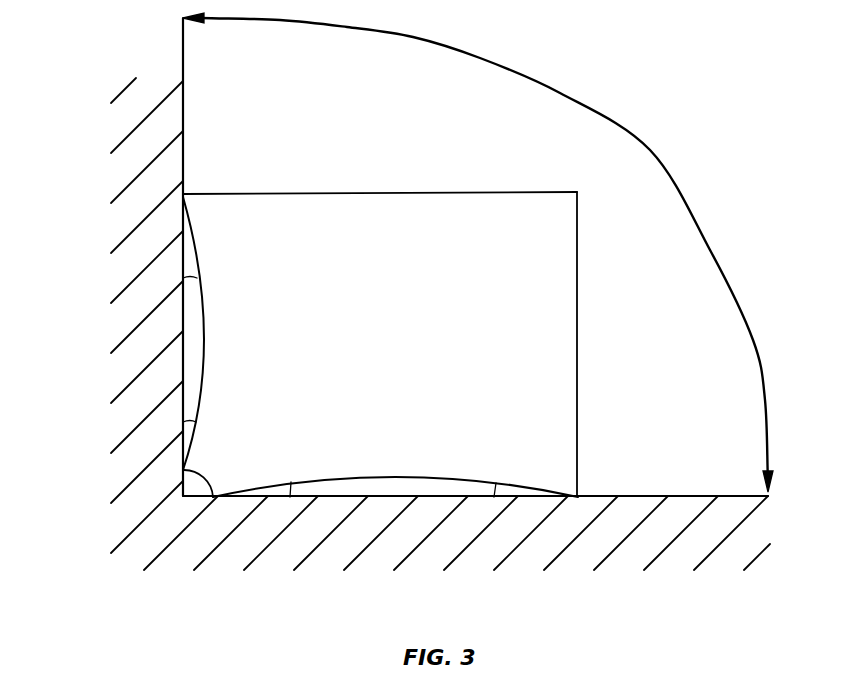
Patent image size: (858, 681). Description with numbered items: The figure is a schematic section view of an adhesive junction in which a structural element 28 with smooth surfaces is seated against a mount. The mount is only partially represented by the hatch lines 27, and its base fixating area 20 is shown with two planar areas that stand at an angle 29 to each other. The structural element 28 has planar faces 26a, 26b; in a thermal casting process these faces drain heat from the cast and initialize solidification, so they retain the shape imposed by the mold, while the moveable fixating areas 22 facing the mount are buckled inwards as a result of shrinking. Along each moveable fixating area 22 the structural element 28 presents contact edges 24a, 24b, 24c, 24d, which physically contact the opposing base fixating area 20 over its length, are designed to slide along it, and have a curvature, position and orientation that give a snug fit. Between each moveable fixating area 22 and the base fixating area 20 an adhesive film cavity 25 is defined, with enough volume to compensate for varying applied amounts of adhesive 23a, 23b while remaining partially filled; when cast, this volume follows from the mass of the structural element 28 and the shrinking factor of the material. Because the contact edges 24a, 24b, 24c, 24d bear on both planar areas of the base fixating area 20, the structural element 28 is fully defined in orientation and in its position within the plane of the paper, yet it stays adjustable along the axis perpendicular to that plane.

The base fixating area 20 is at (183, 107).
The moveable fixating area 22 is at (203, 350).
The adhesive 23a is at (388, 484).
The adhesive 23b is at (183, 348).
The contact edge 24a is at (580, 496).
The contact edge 24b is at (213, 498).
The contact edge 24c is at (183, 472).
The contact edge 24d is at (183, 198).
The adhesive film cavity 25 is at (248, 495).
The planar face 26a is at (577, 345).
The planar face 26b is at (335, 193).
The hatch lines 27 is at (764, 551).
The structural element 28 is at (560, 228).
The angle 29 is at (585, 107).